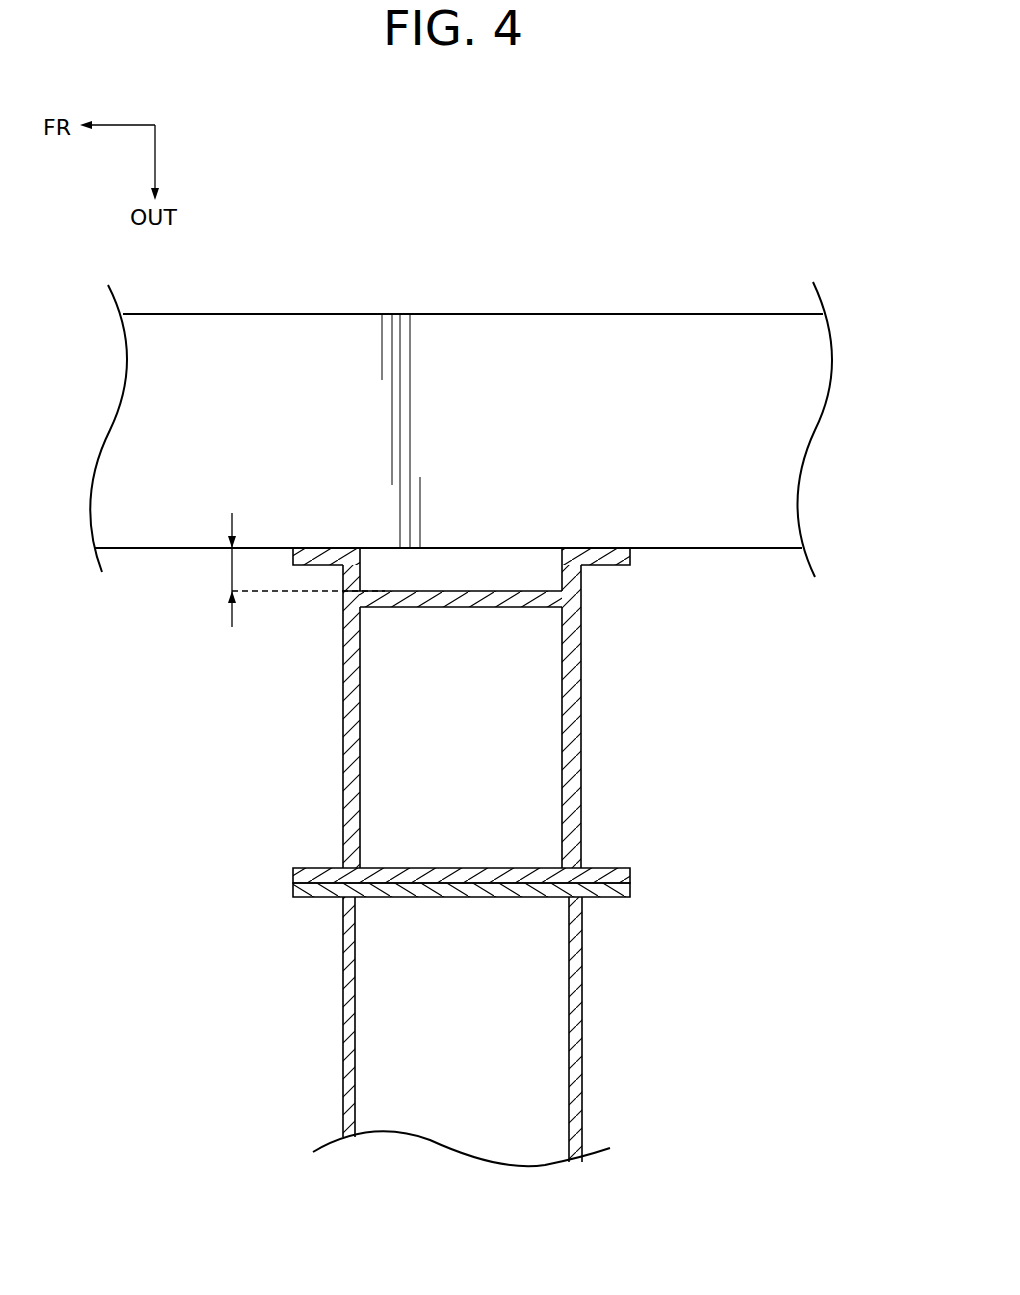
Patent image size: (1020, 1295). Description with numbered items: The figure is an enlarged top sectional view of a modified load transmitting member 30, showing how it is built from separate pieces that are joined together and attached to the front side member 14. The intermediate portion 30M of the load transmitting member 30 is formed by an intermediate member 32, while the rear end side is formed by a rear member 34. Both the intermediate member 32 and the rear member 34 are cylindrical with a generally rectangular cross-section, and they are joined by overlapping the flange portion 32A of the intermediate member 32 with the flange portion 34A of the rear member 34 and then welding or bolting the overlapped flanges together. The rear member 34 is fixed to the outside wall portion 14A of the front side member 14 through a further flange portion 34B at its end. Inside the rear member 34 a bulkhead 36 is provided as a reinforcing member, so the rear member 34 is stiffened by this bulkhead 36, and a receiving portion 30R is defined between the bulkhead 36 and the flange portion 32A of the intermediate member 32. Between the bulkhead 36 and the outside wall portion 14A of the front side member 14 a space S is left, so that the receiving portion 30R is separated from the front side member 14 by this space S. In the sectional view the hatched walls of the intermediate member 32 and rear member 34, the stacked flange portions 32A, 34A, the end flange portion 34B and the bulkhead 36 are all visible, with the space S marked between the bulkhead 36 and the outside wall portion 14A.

The front side member 14 is at (681, 306).
The outside wall portion 14A is at (717, 549).
The load transmitting member 30 is at (199, 889).
The receiving portion 30R is at (292, 733).
The intermediate portion 30M is at (295, 1012).
The intermediate member 32 is at (595, 1036).
The flange portion 32A is at (453, 898).
The rear member 34 is at (595, 737).
The flange portion 34A is at (450, 867).
The flange portion 34B is at (612, 566).
The bulkhead 36 is at (465, 608).
The space S is at (232, 572).